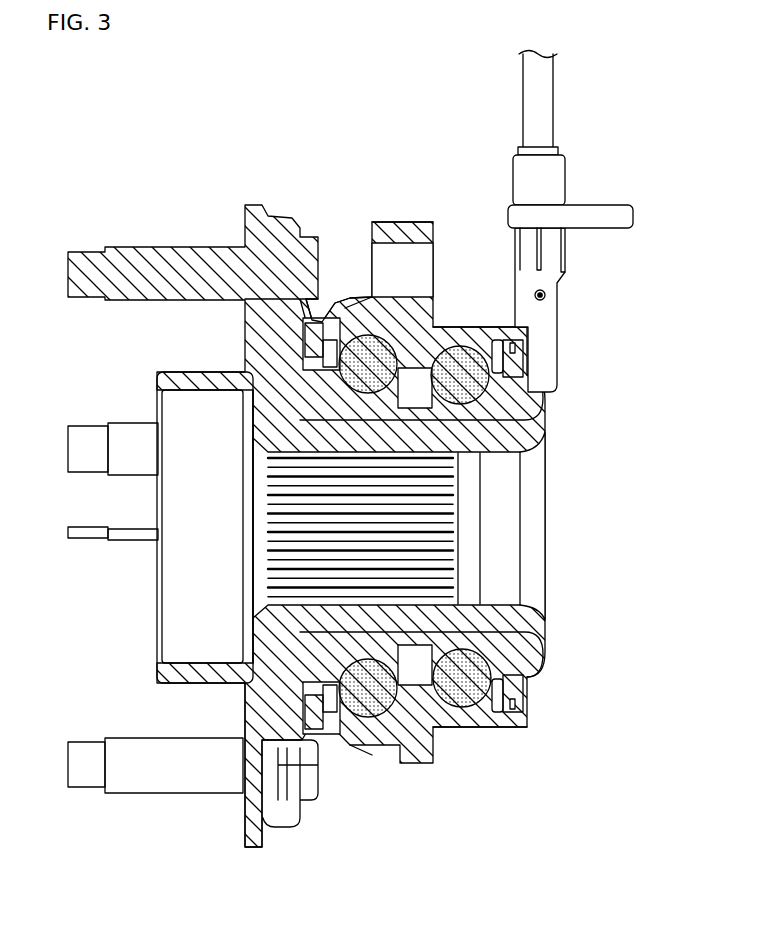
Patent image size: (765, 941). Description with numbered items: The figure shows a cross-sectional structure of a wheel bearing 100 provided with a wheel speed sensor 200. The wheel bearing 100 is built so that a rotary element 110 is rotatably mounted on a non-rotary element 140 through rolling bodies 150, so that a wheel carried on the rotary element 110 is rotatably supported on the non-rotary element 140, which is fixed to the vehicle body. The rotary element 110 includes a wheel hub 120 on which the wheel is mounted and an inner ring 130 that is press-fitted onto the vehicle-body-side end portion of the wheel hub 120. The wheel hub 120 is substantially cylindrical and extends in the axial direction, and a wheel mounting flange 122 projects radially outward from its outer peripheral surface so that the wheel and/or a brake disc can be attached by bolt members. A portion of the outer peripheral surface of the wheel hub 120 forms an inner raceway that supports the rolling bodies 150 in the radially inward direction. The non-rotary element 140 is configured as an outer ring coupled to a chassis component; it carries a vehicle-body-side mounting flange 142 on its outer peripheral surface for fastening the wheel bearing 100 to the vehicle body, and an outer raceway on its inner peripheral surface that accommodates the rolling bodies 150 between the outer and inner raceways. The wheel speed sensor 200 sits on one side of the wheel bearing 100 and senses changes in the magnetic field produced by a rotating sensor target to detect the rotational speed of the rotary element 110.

The wheel bearing 100 is at (232, 168).
The rotary element 110 is at (510, 812).
The wheel hub 120 is at (338, 660).
The wheel mounting flange 122 is at (252, 840).
The inner ring 130 is at (497, 720).
The non-rotary element 140 is at (350, 305).
The vehicle-body-side mounting flange 142 is at (398, 225).
The rolling bodies 150 is at (530, 662).
The wheel speed sensor 200 is at (548, 278).